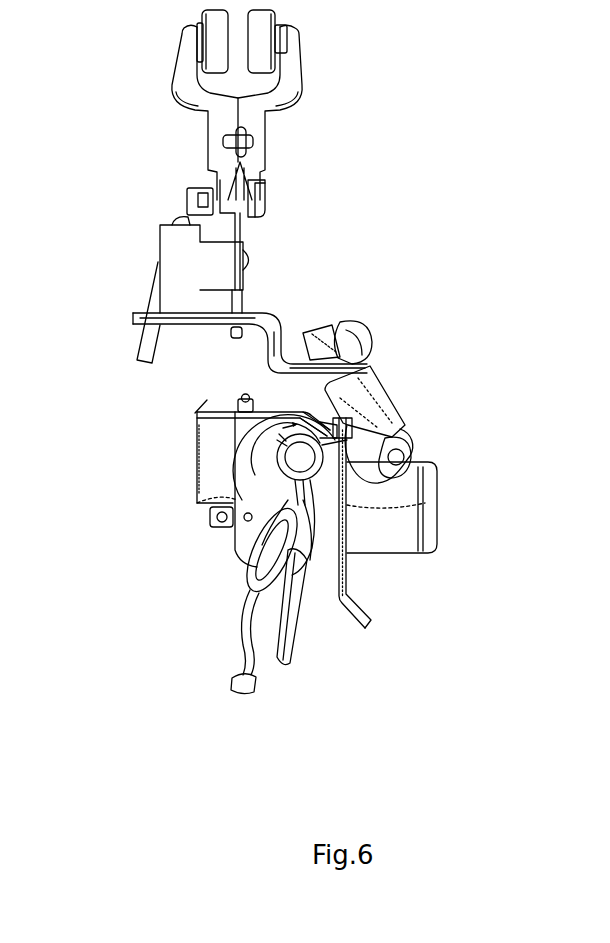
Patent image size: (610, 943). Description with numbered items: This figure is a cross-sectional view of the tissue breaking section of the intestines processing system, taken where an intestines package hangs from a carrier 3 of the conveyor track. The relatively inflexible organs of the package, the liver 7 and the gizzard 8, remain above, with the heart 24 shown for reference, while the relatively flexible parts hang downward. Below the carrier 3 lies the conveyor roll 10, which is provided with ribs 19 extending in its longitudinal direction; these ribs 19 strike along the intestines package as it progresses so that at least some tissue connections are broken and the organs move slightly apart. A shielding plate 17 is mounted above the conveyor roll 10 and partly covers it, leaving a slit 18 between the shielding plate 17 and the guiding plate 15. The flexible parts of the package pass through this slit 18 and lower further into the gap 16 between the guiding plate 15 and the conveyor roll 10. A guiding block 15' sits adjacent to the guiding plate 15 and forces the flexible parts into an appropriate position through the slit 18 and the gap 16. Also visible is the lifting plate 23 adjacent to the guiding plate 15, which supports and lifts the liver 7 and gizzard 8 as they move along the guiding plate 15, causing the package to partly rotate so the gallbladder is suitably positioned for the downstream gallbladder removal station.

The carrier 3 is at (170, 151).
The liver 7 is at (402, 386).
The gizzard 8 is at (412, 445).
The conveyor roll 10 is at (260, 462).
The guiding plate 15 is at (428, 566).
The guiding block 15' is at (339, 662).
The gap 16 is at (345, 500).
The shielding plate 17 is at (287, 395).
The slit 18 is at (346, 413).
The ribs 19 is at (260, 433).
The lifting plate 23 is at (391, 532).
The heart 24 is at (366, 340).